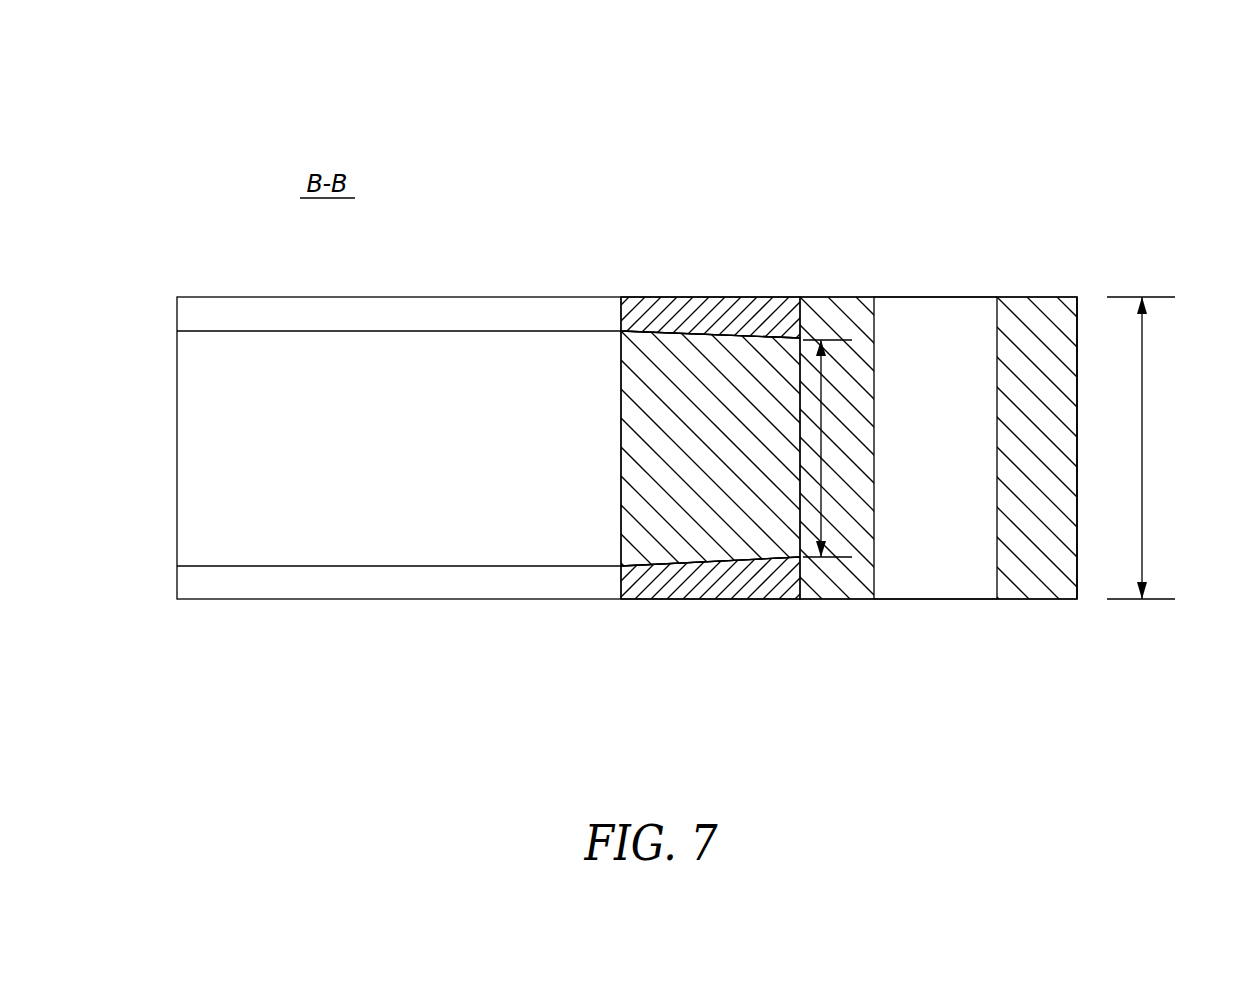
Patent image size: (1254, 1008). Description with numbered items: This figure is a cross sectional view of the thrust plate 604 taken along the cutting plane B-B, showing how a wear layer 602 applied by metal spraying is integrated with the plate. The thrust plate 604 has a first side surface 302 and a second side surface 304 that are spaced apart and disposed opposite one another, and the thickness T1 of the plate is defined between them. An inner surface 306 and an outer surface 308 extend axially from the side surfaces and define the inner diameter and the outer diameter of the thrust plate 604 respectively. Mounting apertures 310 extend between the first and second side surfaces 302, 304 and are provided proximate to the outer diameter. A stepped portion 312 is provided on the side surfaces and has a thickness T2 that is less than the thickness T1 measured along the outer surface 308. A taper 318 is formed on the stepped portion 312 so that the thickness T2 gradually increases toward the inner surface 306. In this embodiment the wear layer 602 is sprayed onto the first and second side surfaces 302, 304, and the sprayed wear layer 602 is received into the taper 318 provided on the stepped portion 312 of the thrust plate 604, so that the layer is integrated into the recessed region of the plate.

The thrust plate 604 is at (1072, 141).
The first side surface 302 is at (1044, 610).
The second side surface 304 is at (1045, 285).
The inner surface 306 is at (611, 553).
The outer surface 308 is at (1090, 328).
The mounting apertures 310 is at (935, 580).
The stepped portion 312 is at (695, 505).
The taper 318 is at (678, 333).
The wear layer 602 is at (748, 332).
The thickness T1 is at (1147, 448).
The thickness T2 is at (822, 447).